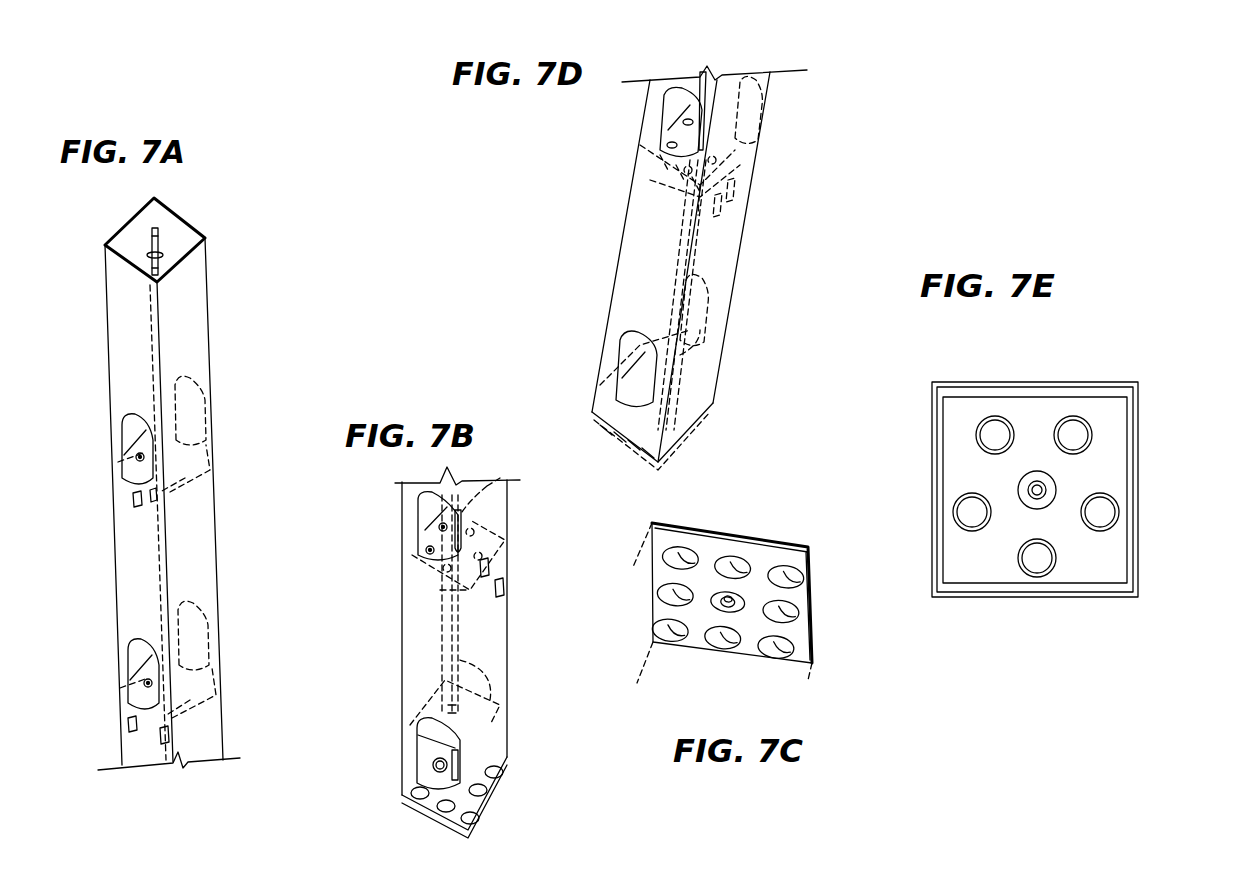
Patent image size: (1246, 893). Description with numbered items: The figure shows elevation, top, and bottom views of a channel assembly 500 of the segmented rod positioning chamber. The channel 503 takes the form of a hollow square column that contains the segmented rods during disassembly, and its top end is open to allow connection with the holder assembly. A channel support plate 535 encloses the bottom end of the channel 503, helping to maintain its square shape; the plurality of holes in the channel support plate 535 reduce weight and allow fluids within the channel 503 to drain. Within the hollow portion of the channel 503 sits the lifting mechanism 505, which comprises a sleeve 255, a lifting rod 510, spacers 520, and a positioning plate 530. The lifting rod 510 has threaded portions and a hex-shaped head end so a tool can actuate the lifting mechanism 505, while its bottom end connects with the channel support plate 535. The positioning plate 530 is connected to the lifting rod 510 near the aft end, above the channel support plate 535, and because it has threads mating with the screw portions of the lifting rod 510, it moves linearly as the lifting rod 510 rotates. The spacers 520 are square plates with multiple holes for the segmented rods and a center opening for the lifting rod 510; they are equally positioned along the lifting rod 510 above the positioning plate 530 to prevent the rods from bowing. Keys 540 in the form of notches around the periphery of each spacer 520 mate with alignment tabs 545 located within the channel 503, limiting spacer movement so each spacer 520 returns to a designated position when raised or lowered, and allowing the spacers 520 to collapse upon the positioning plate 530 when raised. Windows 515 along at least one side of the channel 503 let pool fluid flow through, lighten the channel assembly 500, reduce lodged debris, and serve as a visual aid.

In FIG. 7B, the channel assembly 500 is at (385, 773).
In FIG. 7D, the channel assembly 500 is at (813, 356).
In FIG. 7E, the channel assembly 500 is at (1138, 375).
In FIG. 7A, the channel 503 is at (212, 301).
In FIG. 7B, the channel 503 is at (507, 650).
In FIG. 7C, the channel 503 is at (713, 682).
In FIG. 7D, the channel 503 is at (628, 215).
In FIG. 7A, the lifting mechanism 505 is at (164, 206).
In FIG. 7A, the lifting rod 510 is at (152, 250).
In FIG. 7B, the lifting rod 510 is at (450, 643).
In FIG. 7D, the lifting rod 510 is at (668, 260).
In FIG. 7E, the lifting rod 510 is at (1040, 487).
In FIG. 7A, the sleeve 255 is at (160, 254).
In FIG. 7A, the windows 515 is at (203, 390).
In FIG. 7B, the windows 515 is at (482, 494).
In FIG. 7D, the windows 515 is at (760, 68).
In FIG. 7A, the spacers 520 is at (212, 470).
In FIG. 7B, the spacers 520 is at (418, 562).
In FIG. 7D, the spacers 520 is at (640, 147).
In FIG. 7E, the spacers 520 is at (1103, 575).
In FIG. 7B, the positioning plate 530 is at (497, 716).
In FIG. 7D, the positioning plate 530 is at (600, 385).
In FIG. 7B, the channel support plate 535 is at (500, 775).
In FIG. 7C, the channel support plate 535 is at (772, 600).
In FIG. 7D, the channel support plate 535 is at (606, 430).
In FIG. 7B, the keys 540 is at (425, 745).
In FIG. 7D, the keys 540 is at (648, 180).
In FIG. 7E, the keys 540 is at (1097, 382).
In FIG. 7A, the alignment tabs 545 is at (135, 495).
In FIG. 7B, the alignment tabs 545 is at (500, 598).
In FIG. 7D, the alignment tabs 545 is at (730, 212).